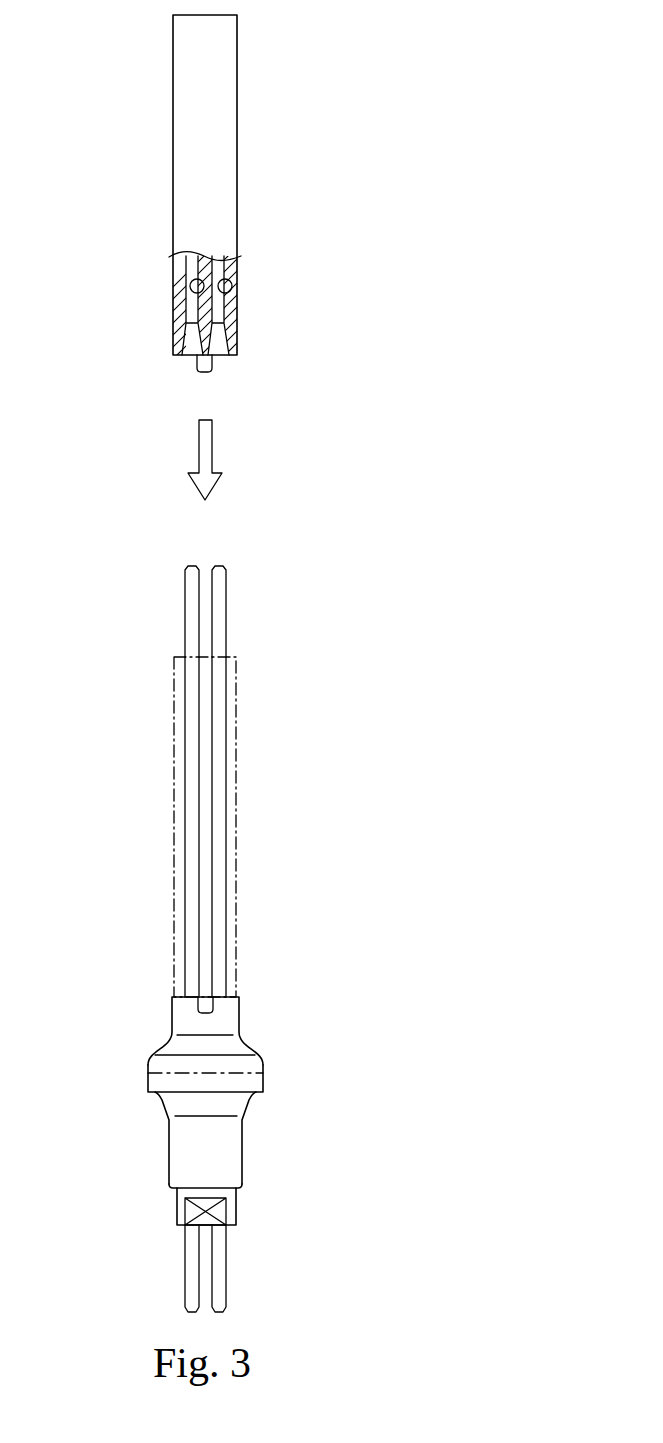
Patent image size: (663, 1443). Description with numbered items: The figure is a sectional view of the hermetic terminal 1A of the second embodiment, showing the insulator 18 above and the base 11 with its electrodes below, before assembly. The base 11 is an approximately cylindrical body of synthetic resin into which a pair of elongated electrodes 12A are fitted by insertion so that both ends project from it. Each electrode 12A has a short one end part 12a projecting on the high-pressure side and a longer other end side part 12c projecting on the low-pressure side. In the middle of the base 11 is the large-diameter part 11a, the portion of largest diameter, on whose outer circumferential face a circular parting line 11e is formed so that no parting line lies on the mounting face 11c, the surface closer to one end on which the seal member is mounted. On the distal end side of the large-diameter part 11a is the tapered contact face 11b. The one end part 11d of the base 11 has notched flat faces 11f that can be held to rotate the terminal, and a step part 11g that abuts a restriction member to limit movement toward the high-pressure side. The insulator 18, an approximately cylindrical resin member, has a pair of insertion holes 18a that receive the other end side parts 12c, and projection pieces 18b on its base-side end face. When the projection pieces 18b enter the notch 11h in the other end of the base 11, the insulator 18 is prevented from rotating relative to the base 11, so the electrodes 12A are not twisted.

The hermetic terminal 1A is at (318, 648).
The base 11 is at (206, 1092).
The large-diameter part 11a is at (264, 1073).
The contact face 11b is at (160, 1047).
The mounting face 11c is at (244, 1140).
The one end part 11d is at (180, 1215).
The parting line 11e is at (154, 1073).
The flat face 11f is at (224, 1210).
The step part 11g is at (170, 1195).
The notch 11h is at (215, 994).
The electrode 12A is at (192, 602).
The one end part 12a is at (192, 1252).
The other end side part 12c is at (192, 762).
The insulator 18 is at (228, 171).
The insertion hole 18a is at (191, 283).
The projection piece 18b is at (208, 366).